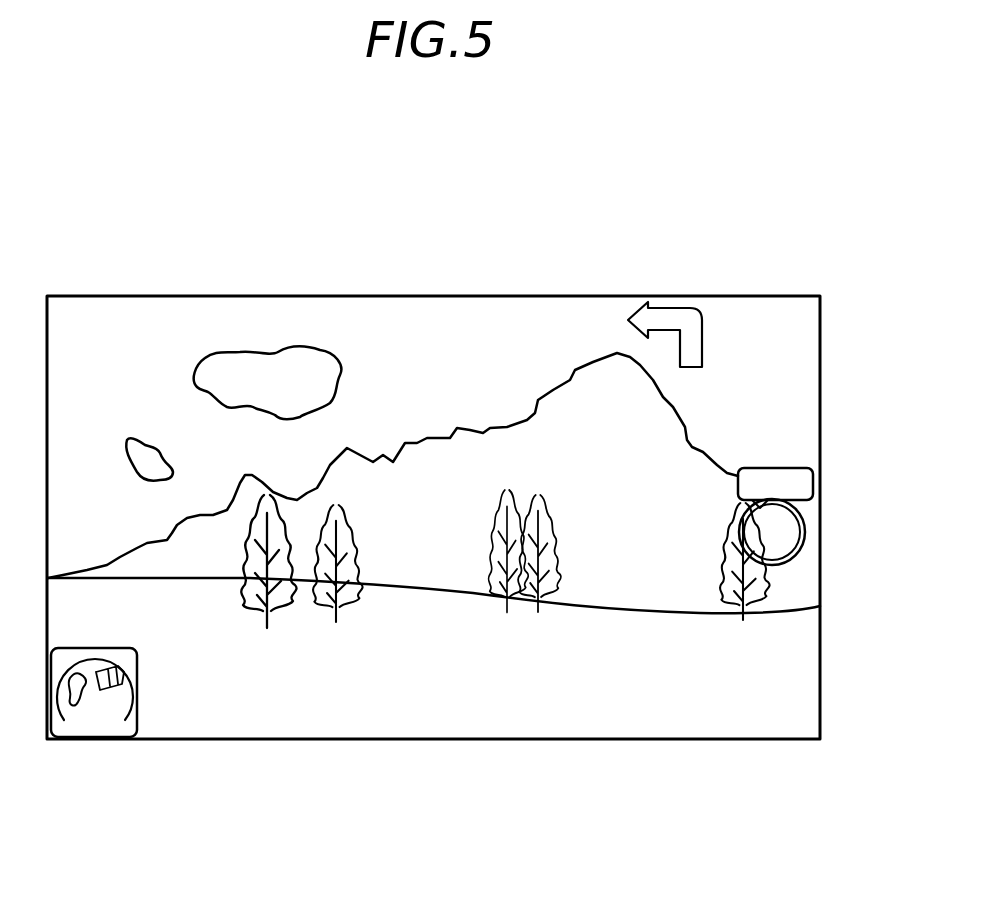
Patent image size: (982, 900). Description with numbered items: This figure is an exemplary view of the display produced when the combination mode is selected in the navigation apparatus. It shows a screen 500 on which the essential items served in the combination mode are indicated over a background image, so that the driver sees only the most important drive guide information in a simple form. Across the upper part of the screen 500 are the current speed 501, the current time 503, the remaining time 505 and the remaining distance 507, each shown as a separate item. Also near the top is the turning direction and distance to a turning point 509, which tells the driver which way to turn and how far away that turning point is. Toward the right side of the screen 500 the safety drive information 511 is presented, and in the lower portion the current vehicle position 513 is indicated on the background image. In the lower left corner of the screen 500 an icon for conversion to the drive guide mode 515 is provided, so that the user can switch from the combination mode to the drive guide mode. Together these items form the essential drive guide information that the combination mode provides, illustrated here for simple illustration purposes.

The screen 500 is at (313, 741).
The current speed 501 is at (108, 305).
The current time 503 is at (250, 310).
The remaining time 505 is at (427, 312).
The remaining distance 507 is at (529, 314).
The turning direction and distance to a turning point 509 is at (717, 322).
The safety drive information 511 is at (805, 525).
The current vehicle position 513 is at (778, 706).
The icon for conversion to the drive guide mode 515 is at (66, 742).